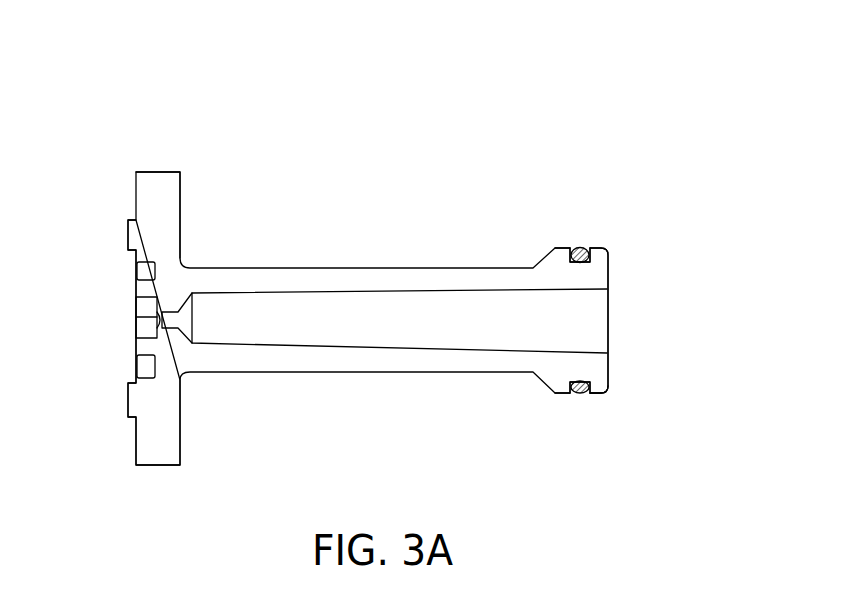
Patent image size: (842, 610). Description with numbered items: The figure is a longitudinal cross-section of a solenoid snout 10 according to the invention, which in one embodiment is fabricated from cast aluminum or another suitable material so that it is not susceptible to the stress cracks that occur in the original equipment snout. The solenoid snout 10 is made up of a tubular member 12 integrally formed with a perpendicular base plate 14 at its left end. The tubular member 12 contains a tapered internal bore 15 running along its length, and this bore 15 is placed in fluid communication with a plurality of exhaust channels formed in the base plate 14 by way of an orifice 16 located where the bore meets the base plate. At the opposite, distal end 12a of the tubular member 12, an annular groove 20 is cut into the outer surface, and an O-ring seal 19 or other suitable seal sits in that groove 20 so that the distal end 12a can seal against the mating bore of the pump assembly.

The solenoid snout 10 is at (389, 99).
The tubular member 12 is at (430, 363).
The distal end 12a is at (602, 377).
The base plate 14 is at (138, 190).
The tapered internal bore 15 is at (582, 322).
The orifice 16 is at (185, 313).
The O-ring seal 19 is at (583, 248).
The annular groove 20 is at (568, 380).